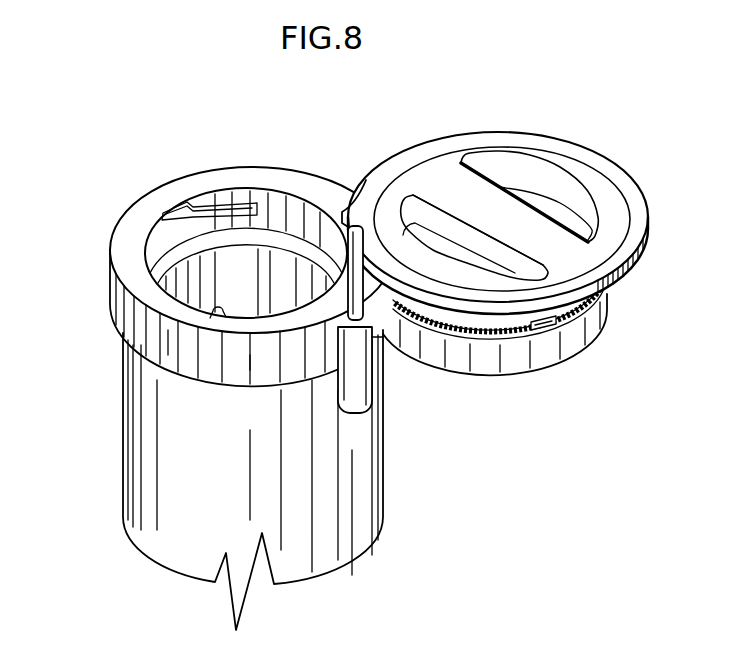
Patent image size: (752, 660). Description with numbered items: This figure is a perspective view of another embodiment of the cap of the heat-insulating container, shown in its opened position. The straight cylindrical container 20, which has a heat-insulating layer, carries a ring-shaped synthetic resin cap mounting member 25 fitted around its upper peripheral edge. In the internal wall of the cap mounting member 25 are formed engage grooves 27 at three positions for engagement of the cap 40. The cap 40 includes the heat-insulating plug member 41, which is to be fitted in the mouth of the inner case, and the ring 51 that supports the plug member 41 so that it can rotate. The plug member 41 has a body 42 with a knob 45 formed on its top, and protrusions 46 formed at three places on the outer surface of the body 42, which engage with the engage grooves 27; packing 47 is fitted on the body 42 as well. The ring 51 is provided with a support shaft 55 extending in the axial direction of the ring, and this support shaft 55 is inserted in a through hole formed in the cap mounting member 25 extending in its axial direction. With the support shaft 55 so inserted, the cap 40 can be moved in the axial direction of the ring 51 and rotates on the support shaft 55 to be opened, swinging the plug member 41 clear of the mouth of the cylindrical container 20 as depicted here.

The cylindrical container 20 is at (121, 448).
The cap mounting member 25 is at (220, 276).
The engage grooves 27 is at (189, 208).
The cap 40 is at (530, 246).
The plug member 41 is at (606, 185).
The body 42 is at (610, 310).
The knob 45 is at (529, 221).
The protrusions 46 is at (552, 329).
The packing 47 is at (496, 340).
The ring 51 is at (647, 217).
The support shaft 55 is at (384, 333).